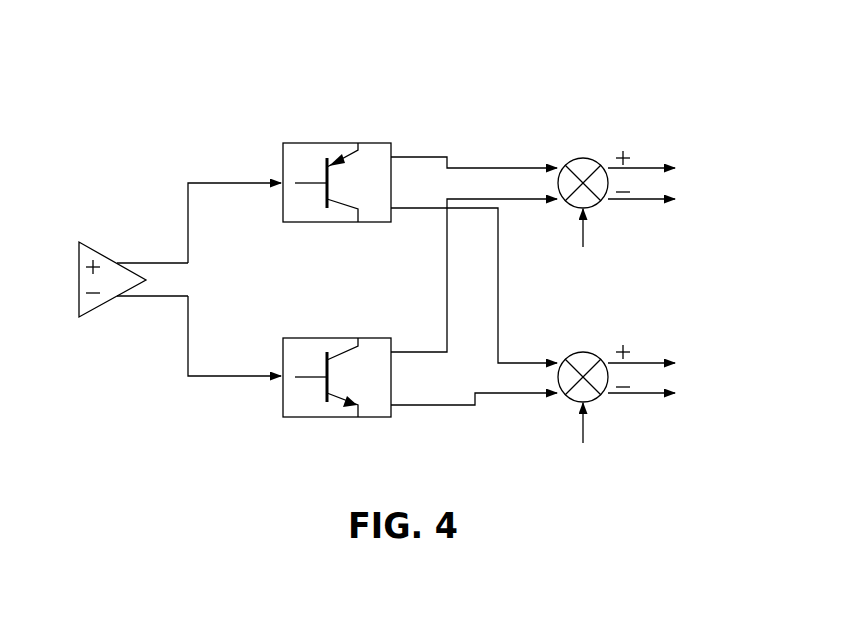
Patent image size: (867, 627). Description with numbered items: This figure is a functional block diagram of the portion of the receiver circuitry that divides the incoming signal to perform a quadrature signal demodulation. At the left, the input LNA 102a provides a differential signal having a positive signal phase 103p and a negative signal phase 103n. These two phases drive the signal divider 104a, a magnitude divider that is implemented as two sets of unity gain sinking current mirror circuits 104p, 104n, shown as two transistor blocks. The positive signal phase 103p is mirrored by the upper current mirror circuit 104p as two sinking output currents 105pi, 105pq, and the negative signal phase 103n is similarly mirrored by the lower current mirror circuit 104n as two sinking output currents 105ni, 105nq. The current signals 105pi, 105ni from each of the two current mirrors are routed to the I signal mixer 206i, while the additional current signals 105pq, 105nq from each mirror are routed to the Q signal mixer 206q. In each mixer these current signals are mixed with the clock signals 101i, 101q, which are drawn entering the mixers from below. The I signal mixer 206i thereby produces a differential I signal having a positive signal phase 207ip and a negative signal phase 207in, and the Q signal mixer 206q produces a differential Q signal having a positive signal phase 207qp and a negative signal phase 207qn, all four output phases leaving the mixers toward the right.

The input LNA 102a is at (118, 235).
The positive signal phase 103p is at (211, 182).
The negative signal phase 103n is at (203, 377).
The signal divider 104a is at (245, 116).
The unity gain sinking current mirror circuit 104p is at (313, 143).
The unity gain sinking current mirror circuit 104n is at (304, 418).
The sinking output current 105pi is at (433, 156).
The sinking output current 105pq is at (423, 209).
The sinking output current 105ni is at (428, 351).
The sinking output current 105nq is at (416, 406).
The I signal mixer 206i is at (567, 165).
The Q signal mixer 206q is at (567, 397).
The clock signal 101i is at (583, 247).
The clock signal 101q is at (583, 443).
The positive signal phase 207ip is at (650, 167).
The negative signal phase 207in is at (645, 200).
The positive signal phase 207qp is at (648, 362).
The negative signal phase 207qn is at (645, 394).